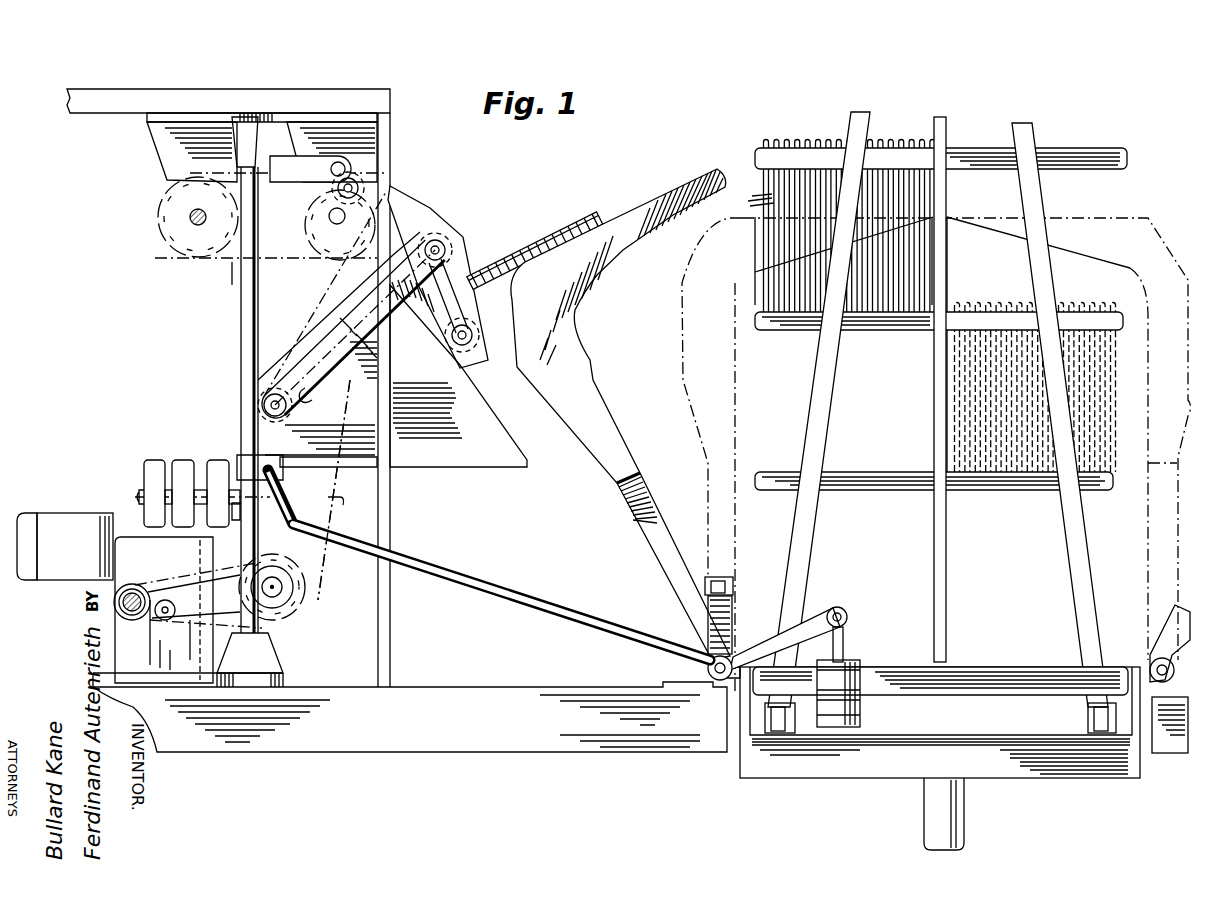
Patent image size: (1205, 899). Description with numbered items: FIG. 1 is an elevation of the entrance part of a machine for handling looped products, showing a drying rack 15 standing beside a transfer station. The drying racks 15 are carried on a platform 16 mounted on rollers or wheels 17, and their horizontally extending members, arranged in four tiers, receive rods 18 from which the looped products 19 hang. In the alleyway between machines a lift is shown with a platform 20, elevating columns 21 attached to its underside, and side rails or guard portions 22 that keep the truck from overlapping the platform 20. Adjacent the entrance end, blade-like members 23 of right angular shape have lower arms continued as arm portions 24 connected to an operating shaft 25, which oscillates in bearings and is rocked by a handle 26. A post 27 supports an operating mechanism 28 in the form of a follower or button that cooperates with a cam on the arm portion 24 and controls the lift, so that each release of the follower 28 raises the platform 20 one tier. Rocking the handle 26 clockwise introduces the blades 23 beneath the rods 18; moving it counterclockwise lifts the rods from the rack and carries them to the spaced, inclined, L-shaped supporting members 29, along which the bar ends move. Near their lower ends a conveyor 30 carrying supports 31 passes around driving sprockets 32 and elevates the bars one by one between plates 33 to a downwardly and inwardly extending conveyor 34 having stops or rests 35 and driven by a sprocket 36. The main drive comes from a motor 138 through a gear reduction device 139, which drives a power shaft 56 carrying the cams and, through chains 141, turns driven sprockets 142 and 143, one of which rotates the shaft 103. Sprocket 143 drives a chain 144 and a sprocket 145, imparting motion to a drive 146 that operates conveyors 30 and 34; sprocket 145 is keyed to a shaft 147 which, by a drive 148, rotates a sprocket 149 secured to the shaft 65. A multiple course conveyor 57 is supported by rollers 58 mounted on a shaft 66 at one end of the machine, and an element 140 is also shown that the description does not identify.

The drying racks 15 is at (1105, 136).
The platform 16 is at (1020, 657).
The rollers or wheels 17 is at (781, 734).
The rods 18 is at (783, 136).
The looped products 19 is at (748, 201).
The platform 20 is at (1075, 768).
The elevating columns 21 is at (962, 838).
The side rails or guard portions 22 is at (737, 752).
The blade-like members 23 is at (655, 190).
The arm portion 24 is at (660, 580).
The operating shafts 25 is at (716, 682).
The handle 26 is at (500, 570).
The post 27 is at (733, 612).
The operating mechanism 28 is at (735, 585).
The inclined supporting members 29 is at (545, 218).
The conveyor 30 is at (448, 330).
The supports 31 is at (432, 305).
The driving wheels or sprockets 32 is at (443, 240).
The plates 33 is at (428, 210).
The conveyor 34 is at (320, 340).
The stops or rests 35 is at (312, 398).
The wheel or sprocket 36 is at (262, 405).
The power shaft 56 is at (138, 585).
The multiple course conveyor 57 is at (182, 458).
The rollers 58 is at (152, 485).
The shaft 65 is at (190, 214).
The shaft 66 is at (136, 492).
The shaft 103 is at (283, 588).
The motor 138 is at (85, 505).
The gear reduction device 139 is at (164, 610).
The roller 140 is at (150, 620).
The chains 141 is at (192, 625).
The driven sprocket 142 is at (305, 603).
The sprocket 143 is at (300, 575).
The chain 144 is at (350, 490).
The sprocket 145 is at (317, 237).
The drive 146 is at (372, 180).
The shaft 147 is at (329, 216).
The drive 148 is at (232, 262).
The sprocket 149 is at (178, 233).